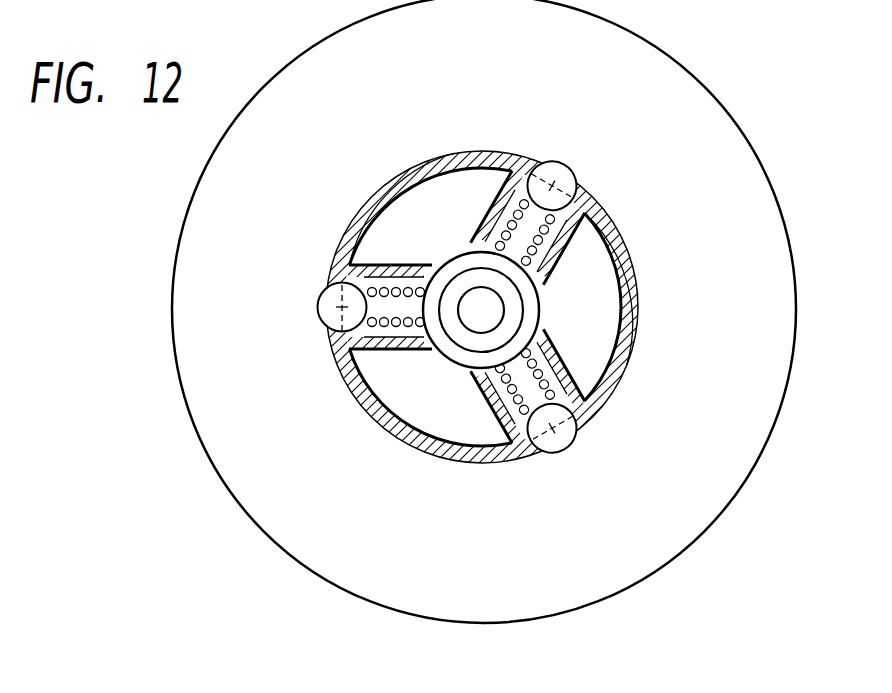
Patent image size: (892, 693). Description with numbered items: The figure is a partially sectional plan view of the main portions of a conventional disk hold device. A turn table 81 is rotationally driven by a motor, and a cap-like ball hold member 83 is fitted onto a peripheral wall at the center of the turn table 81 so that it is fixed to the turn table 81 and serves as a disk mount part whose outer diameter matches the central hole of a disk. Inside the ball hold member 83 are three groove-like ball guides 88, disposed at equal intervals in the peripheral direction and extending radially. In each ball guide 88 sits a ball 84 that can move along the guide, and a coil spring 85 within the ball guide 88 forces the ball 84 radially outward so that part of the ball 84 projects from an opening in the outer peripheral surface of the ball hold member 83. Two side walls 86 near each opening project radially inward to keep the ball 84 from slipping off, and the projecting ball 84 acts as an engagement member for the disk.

The turn table 81 is at (760, 191).
The ball hold member 83 is at (640, 321).
The ball 84 is at (558, 185).
The coil spring 85 is at (493, 202).
The side wall 86 is at (520, 168).
The ball guide 88 is at (480, 232).